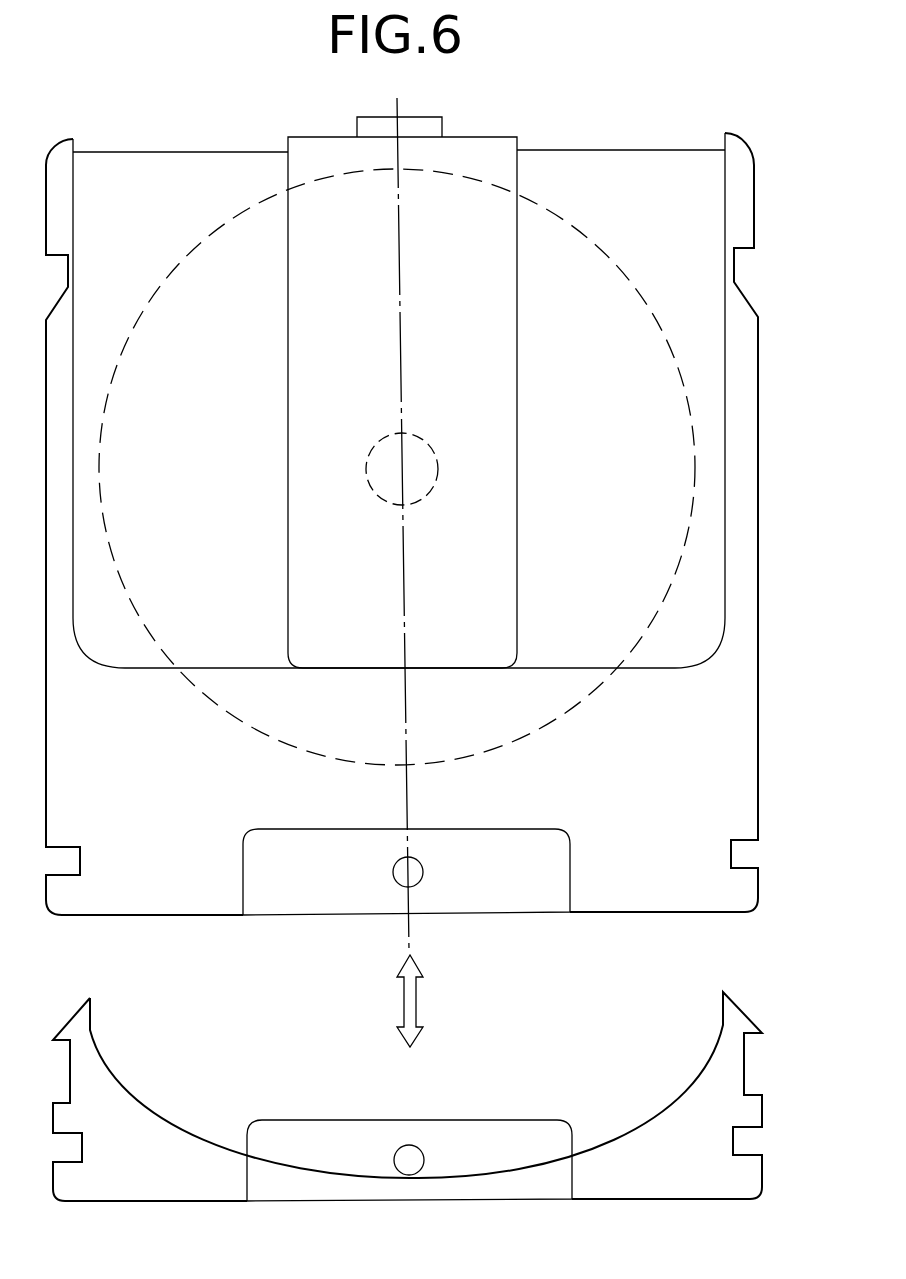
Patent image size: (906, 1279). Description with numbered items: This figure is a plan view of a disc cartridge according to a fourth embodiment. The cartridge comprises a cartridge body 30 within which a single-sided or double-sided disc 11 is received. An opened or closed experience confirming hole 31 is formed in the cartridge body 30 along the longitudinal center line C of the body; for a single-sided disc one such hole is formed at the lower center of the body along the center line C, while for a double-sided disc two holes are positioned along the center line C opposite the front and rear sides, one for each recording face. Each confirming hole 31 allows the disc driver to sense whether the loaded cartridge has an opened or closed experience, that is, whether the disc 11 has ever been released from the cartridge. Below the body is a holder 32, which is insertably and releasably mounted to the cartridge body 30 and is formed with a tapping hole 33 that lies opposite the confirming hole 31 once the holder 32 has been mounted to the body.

The cartridge body 30 is at (754, 358).
The disc 11 is at (695, 462).
The opened or closed experience confirming hole 31 is at (408, 872).
The holder 32 is at (762, 1110).
The tapping hole 33 is at (409, 1160).
The longitudinal center line C is at (397, 160).